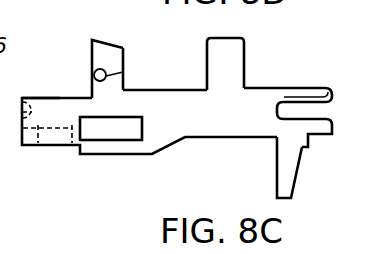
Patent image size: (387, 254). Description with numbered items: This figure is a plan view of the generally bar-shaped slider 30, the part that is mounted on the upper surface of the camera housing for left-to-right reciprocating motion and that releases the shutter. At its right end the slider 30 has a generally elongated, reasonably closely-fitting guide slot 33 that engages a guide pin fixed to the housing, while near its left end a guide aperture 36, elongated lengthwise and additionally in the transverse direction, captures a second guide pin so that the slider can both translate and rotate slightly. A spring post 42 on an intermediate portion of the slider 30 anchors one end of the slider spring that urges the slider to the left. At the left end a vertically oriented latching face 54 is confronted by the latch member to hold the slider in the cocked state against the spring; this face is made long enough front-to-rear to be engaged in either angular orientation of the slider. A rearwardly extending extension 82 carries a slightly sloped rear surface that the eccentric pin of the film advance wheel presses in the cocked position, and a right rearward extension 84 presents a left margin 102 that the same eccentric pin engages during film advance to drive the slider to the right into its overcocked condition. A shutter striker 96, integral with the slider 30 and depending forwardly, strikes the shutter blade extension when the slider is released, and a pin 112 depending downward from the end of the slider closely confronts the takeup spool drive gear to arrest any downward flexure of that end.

The slider 30 is at (238, 125).
The guide slot 33 is at (341, 93).
The guide aperture 36 is at (126, 128).
The spring post 42 is at (124, 70).
The latching face 54 is at (32, 147).
The extension 82 is at (100, 52).
The right rearward extension 84 is at (236, 51).
The shutter striker 96 is at (297, 170).
The left margin 102 is at (207, 50).
The pin 112 is at (50, 98).